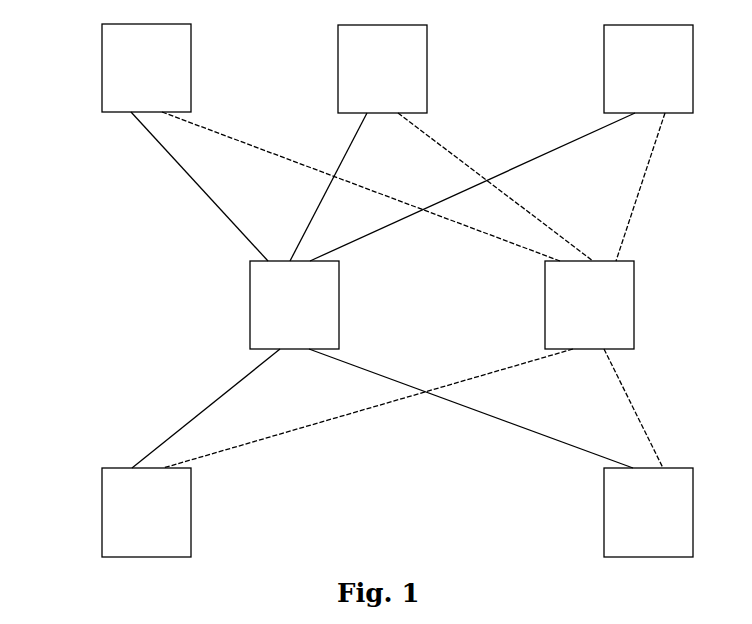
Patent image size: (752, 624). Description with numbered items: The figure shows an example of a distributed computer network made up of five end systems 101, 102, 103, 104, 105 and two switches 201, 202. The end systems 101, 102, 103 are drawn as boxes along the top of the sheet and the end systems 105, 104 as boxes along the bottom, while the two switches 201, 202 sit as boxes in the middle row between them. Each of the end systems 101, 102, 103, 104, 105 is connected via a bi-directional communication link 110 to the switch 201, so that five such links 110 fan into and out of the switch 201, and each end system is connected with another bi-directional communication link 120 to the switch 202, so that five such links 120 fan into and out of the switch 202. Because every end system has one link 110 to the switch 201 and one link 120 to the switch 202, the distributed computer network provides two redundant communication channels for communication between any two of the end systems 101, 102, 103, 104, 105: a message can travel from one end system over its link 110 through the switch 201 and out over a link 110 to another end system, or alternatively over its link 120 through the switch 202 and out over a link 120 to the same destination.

The end system 101 is at (102, 66).
The end system 102 is at (338, 66).
The end system 103 is at (604, 66).
The end system 104 is at (604, 508).
The end system 105 is at (102, 508).
The switch 201 is at (250, 302).
The switch 202 is at (545, 302).
The bi-directional communication link 110 is at (192, 180).
The bi-directional communication link 120 is at (297, 167).